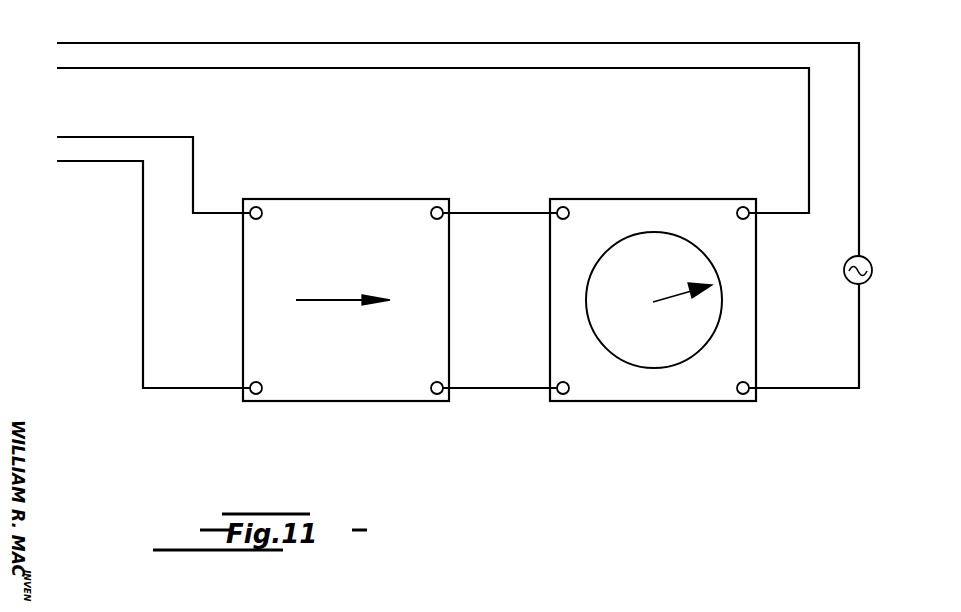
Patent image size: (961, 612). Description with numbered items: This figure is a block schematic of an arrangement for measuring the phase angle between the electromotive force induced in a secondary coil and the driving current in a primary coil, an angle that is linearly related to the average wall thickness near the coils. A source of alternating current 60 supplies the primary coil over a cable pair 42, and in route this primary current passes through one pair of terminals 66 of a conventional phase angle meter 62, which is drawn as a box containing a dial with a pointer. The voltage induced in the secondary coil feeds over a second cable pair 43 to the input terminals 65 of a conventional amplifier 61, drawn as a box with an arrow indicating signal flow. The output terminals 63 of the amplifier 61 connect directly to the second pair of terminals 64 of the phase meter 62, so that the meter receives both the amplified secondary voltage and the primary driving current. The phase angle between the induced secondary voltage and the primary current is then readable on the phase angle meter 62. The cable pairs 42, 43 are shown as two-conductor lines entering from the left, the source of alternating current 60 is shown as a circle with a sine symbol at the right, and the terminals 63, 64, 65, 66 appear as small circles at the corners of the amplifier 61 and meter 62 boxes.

The cable pair 42 is at (58, 25).
The cable pair 43 is at (58, 120).
The source of alternating current 60 is at (870, 273).
The conventional amplifier 61 is at (355, 218).
The conventional phase angle meter 62 is at (673, 218).
The output terminals 63 is at (438, 219).
The second pair of terminals 64 is at (560, 382).
The input terminals 65 is at (252, 383).
The pair of terminals 66 is at (748, 383).